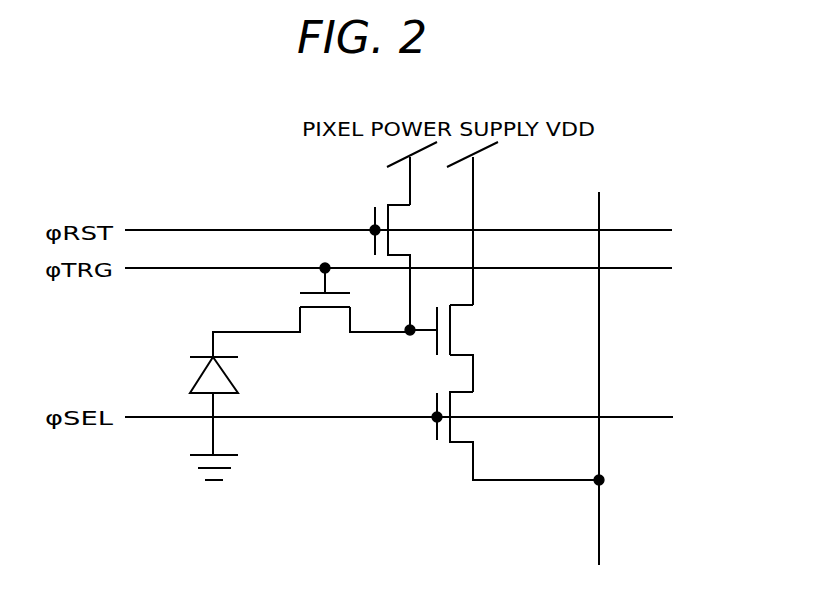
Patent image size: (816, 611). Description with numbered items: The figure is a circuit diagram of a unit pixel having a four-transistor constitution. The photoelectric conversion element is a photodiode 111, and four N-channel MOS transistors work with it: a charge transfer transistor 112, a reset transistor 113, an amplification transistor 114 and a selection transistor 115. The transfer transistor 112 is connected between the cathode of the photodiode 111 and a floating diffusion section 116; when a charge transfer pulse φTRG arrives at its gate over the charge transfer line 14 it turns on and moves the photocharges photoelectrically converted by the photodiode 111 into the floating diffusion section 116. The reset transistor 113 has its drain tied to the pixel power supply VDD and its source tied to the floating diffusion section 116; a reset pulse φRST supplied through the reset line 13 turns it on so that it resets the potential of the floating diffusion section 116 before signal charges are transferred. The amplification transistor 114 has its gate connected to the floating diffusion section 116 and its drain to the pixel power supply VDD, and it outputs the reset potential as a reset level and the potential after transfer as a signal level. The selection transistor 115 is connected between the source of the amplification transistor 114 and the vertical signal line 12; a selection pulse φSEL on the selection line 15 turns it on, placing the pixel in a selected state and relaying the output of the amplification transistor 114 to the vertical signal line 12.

The vertical signal line 12 is at (599, 337).
The reset line 13 is at (648, 228).
The charge transfer line 14 is at (648, 265).
The selection line 15 is at (648, 415).
The photodiode 111 is at (223, 378).
The charge transfer transistor 112 is at (323, 318).
The reset transistor 113 is at (395, 213).
The amplification transistor 114 is at (462, 325).
The selection transistor 115 is at (462, 400).
The floating diffusion (FD) section 116 is at (410, 337).